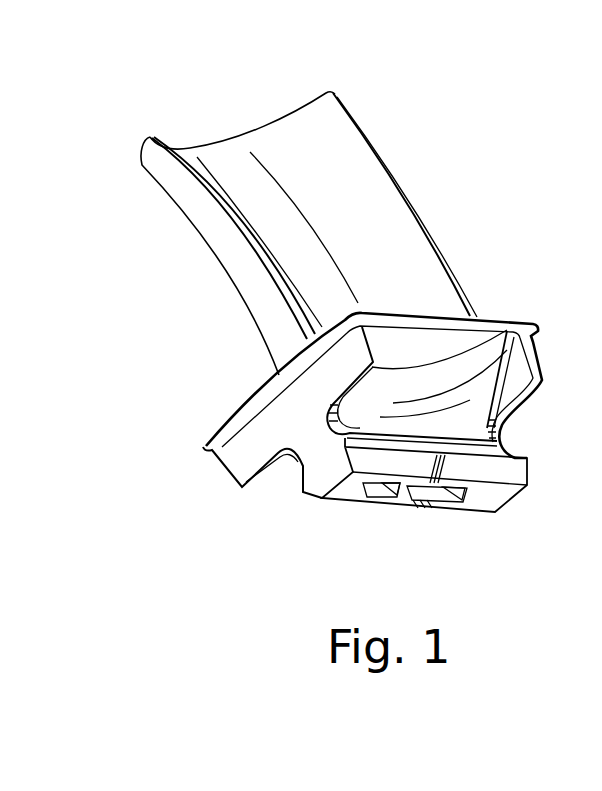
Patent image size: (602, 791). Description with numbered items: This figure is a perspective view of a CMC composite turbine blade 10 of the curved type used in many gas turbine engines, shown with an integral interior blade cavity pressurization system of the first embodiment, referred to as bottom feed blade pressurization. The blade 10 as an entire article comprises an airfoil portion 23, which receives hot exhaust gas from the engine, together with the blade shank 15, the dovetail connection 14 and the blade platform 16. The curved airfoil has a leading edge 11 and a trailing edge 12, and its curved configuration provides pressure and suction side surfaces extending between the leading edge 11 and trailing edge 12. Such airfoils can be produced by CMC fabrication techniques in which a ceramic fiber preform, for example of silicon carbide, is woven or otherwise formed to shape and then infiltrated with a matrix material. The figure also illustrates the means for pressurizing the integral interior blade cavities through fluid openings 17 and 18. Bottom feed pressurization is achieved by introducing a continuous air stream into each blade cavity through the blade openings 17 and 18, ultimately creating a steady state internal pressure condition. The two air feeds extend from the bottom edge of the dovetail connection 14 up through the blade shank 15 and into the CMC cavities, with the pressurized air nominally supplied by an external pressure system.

The turbine blade 10 is at (443, 161).
The leading edge 11 is at (437, 238).
The trailing edge 12 is at (150, 137).
The airfoil portion 23 is at (338, 138).
The dovetail connection 14 is at (515, 473).
The blade shank 15 is at (370, 405).
The blade platform 16 is at (522, 328).
The fluid opening 17 is at (380, 488).
The fluid opening 18 is at (433, 492).